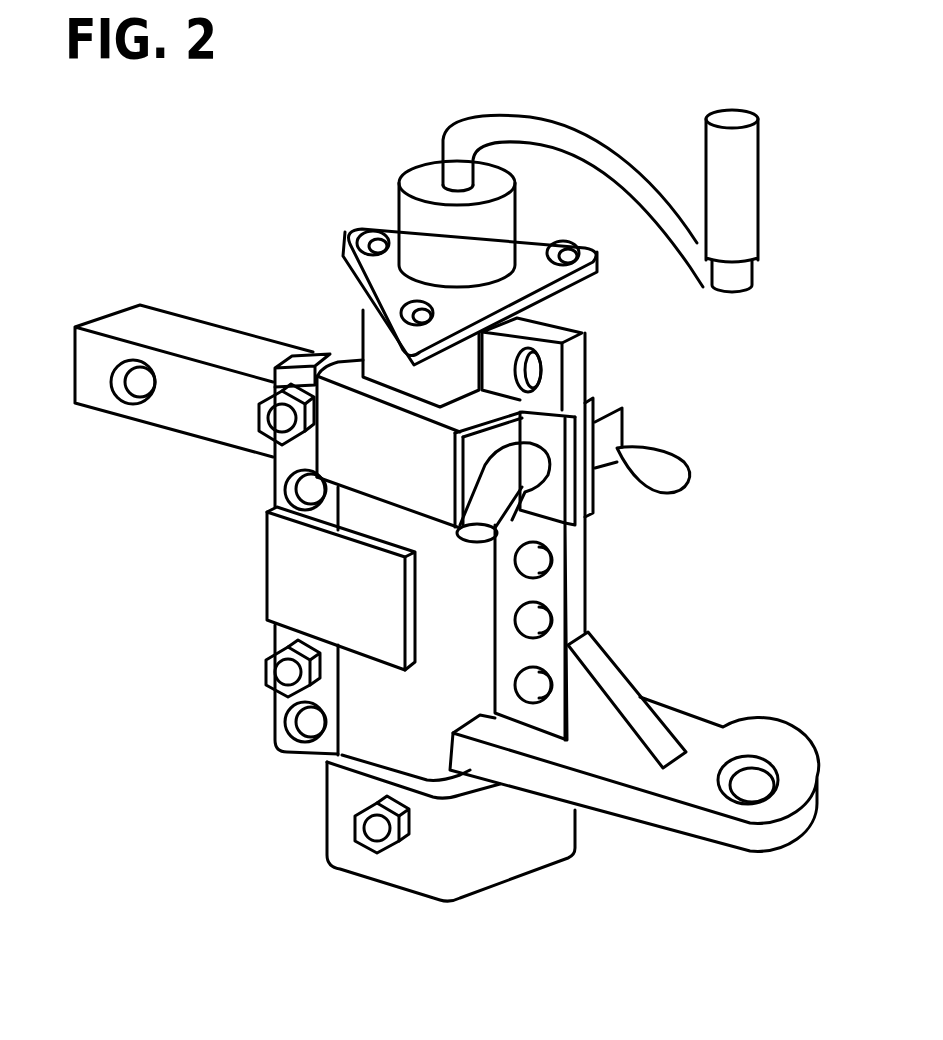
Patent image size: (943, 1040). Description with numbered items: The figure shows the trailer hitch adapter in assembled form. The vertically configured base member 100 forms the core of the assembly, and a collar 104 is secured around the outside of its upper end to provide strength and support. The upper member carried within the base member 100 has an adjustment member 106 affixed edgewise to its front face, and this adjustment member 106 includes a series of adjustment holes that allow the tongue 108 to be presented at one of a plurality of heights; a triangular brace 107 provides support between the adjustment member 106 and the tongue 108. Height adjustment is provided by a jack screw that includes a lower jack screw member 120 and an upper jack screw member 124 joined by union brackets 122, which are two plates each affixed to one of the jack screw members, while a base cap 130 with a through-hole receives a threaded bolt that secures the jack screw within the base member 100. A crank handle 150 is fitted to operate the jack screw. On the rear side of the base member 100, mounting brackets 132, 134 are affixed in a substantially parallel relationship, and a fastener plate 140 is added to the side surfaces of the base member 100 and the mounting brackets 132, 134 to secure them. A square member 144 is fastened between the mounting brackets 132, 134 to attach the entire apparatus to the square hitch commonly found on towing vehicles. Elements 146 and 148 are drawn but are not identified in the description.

The base member 100 is at (387, 723).
The collar 104 is at (367, 448).
The adjustment member 106 is at (577, 383).
The triangular brace 107 is at (634, 697).
The tongue 108 is at (713, 750).
The lower jack screw member 120 is at (373, 348).
The union brackets 122 is at (557, 292).
The upper jack screw member 124 is at (485, 228).
The base cap 130 is at (343, 795).
The mounting bracket 132 is at (345, 345).
The mounting bracket 134 is at (272, 495).
The fastener plate 140 is at (297, 578).
The square member 144 is at (180, 408).
The side bracket 146 is at (613, 436).
The knob 148 is at (673, 485).
The crank handle 150 is at (700, 290).